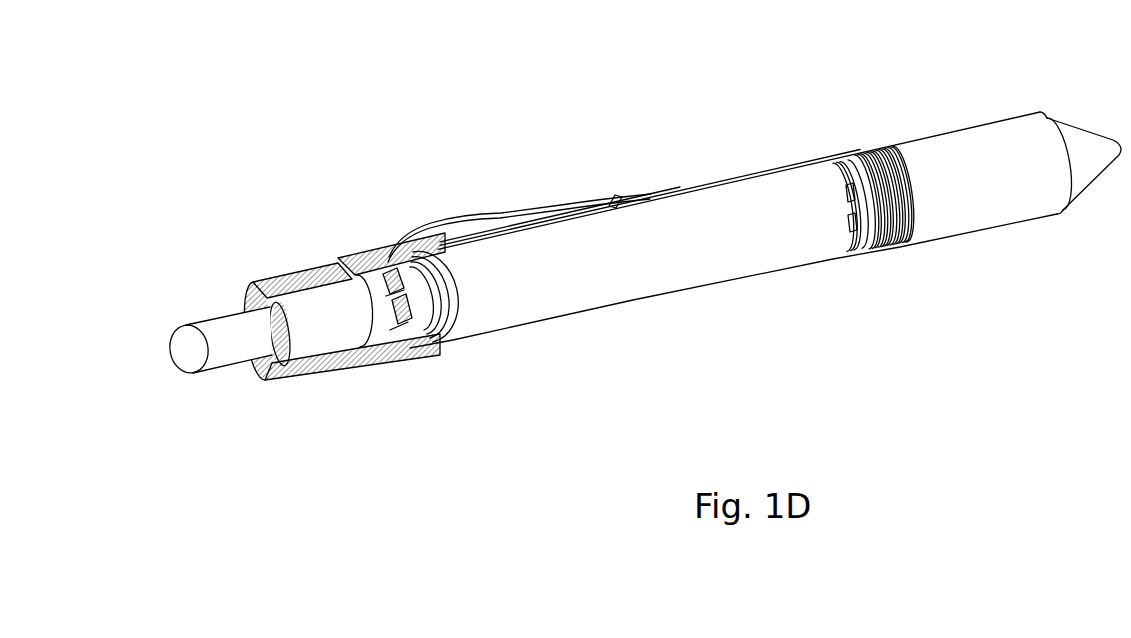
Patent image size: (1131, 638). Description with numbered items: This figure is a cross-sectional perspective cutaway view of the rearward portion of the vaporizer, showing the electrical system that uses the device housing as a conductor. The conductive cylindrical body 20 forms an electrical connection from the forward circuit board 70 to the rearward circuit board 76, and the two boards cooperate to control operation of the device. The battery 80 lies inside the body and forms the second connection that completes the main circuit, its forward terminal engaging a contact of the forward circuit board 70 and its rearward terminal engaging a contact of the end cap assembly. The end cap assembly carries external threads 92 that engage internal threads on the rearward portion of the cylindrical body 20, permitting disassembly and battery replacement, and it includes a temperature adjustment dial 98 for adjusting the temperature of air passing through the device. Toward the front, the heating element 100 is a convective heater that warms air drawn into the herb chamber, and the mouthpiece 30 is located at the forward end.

The cylindrical body 20 is at (690, 188).
The mouthpiece 30 is at (993, 151).
The forward circuit board 70 is at (850, 253).
The rearward circuit board 76 is at (413, 323).
The battery 80 is at (697, 260).
The external threads 92 is at (397, 263).
The temperature adjustment dial 98 is at (223, 355).
The heating element 100 is at (873, 167).